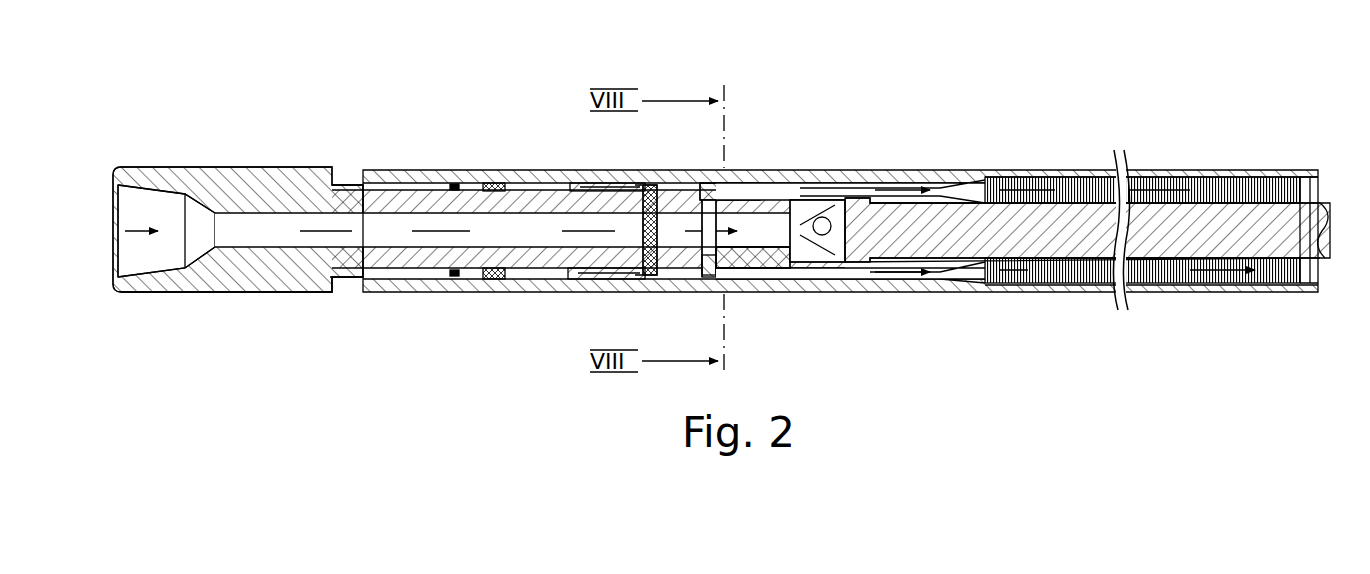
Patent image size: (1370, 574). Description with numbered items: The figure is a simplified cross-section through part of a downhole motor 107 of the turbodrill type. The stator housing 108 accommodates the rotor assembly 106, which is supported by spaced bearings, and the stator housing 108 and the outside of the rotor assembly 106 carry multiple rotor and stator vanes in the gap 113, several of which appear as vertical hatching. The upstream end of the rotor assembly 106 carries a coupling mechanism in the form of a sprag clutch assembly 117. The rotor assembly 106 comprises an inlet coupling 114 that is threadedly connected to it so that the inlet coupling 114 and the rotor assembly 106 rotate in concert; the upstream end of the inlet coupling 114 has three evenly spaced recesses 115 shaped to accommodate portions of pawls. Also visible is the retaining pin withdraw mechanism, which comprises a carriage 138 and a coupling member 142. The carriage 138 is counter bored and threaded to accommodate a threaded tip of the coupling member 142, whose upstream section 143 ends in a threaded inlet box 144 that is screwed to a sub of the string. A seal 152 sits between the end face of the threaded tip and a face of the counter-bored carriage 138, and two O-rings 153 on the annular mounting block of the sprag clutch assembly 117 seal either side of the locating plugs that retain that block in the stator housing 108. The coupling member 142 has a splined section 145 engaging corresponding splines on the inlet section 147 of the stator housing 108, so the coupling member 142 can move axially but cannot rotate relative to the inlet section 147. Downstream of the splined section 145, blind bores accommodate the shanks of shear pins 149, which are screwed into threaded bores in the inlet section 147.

The coupling member 142 is at (195, 165).
The upstream section 143 is at (270, 276).
The threaded inlet box 144 is at (152, 262).
The splined section 145 is at (350, 168).
The downhole motor 107 is at (433, 168).
The O-rings 153 is at (455, 276).
The shear pins 149 is at (505, 189).
The inlet section 147 is at (585, 168).
The seal 152 is at (540, 279).
The carriage 138 is at (625, 186).
The recesses 115 is at (740, 195).
The stator housing 108 is at (1003, 170).
The sprag clutch assembly 117 is at (752, 270).
The inlet coupling 114 is at (847, 262).
The rotor assembly 106 is at (1082, 228).
The gap 113 is at (1213, 180).